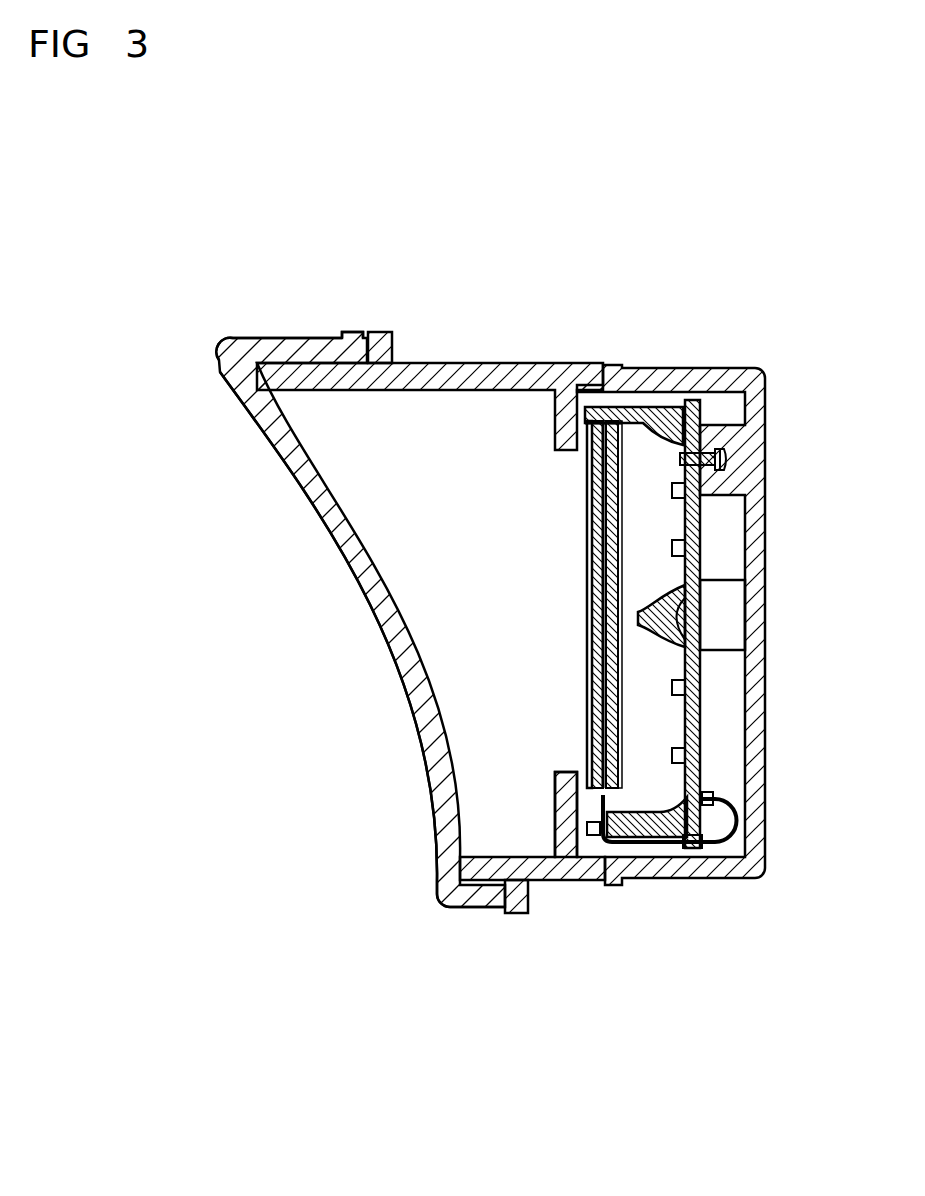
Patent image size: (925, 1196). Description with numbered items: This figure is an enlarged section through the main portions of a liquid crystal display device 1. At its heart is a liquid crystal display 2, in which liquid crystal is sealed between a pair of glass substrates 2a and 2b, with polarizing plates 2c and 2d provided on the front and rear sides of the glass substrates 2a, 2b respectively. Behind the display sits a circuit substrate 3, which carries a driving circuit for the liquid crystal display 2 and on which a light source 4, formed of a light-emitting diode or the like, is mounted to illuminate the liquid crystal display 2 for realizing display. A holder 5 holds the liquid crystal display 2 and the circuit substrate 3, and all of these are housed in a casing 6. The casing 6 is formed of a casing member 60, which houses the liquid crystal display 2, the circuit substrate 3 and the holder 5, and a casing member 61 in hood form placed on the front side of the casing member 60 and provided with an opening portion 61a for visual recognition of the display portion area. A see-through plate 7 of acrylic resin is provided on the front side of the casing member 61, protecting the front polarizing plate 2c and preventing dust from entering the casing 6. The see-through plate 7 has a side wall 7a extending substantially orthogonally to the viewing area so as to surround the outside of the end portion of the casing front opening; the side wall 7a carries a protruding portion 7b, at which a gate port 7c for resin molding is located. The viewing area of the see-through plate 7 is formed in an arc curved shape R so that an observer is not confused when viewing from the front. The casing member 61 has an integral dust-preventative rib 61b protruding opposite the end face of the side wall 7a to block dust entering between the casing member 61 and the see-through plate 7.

The liquid crystal display device 1 is at (310, 665).
The liquid crystal display 2 is at (510, 478).
The glass substrate 2a is at (598, 527).
The glass substrate 2b is at (612, 572).
The polarizing plate 2c is at (590, 503).
The polarizing plate 2d is at (622, 602).
The circuit substrate 3 is at (700, 630).
The light source 4 is at (673, 548).
The holder 5 is at (647, 414).
The casing 6 is at (630, 292).
The casing member 60 is at (643, 376).
The casing member in hood form 61 is at (492, 376).
The opening portion 61a is at (570, 763).
The dust-preventative rib 61b is at (380, 345).
The see-through plate 7 is at (362, 537).
The side wall 7a is at (266, 348).
The protruding portion 7b is at (318, 348).
The gate port 7c is at (350, 331).
The arc curved shape R is at (270, 466).